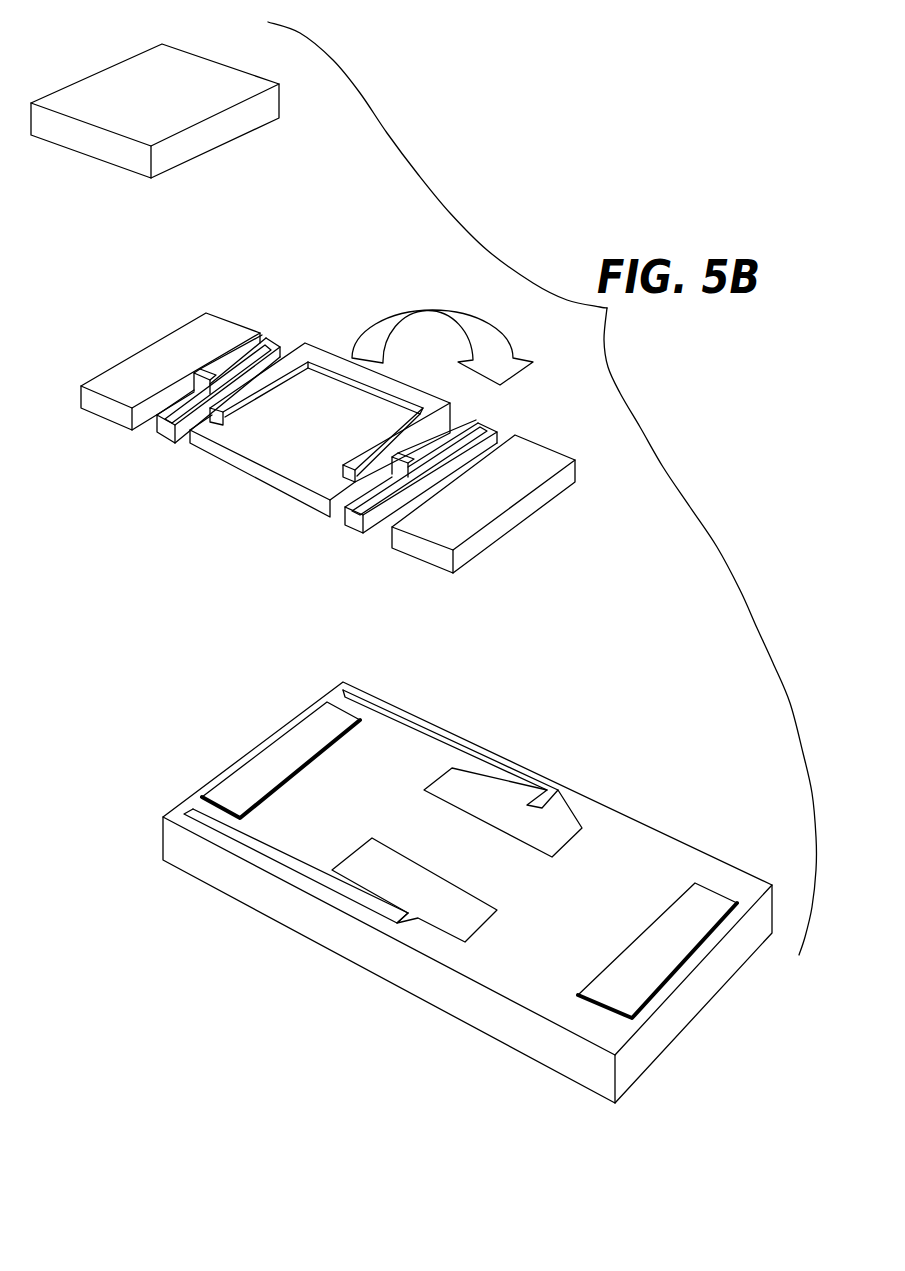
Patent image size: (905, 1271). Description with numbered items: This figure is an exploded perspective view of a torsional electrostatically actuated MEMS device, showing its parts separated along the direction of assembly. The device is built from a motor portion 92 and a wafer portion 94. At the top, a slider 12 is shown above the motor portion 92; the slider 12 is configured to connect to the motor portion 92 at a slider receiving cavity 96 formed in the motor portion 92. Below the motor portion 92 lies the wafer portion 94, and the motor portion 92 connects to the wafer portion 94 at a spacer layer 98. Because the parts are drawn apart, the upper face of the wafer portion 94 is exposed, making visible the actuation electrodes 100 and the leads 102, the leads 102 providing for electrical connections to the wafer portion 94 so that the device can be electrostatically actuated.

The slider 12 is at (133, 88).
The motor portion 92 is at (318, 308).
The wafer portion 94 is at (604, 769).
The slider receiving cavity 96 is at (270, 443).
The spacer layer 98 is at (293, 755).
The actuation electrodes 100 is at (420, 893).
The leads 102 is at (283, 868).